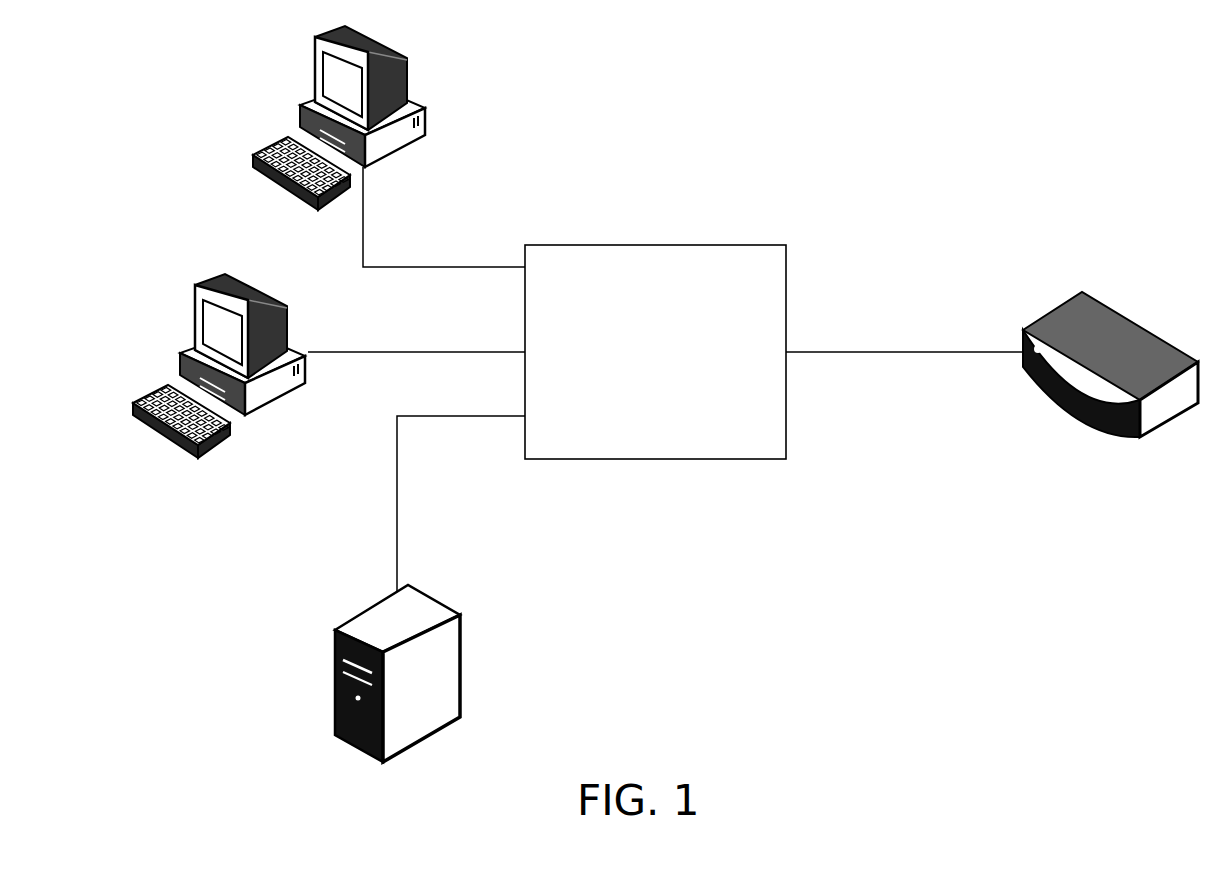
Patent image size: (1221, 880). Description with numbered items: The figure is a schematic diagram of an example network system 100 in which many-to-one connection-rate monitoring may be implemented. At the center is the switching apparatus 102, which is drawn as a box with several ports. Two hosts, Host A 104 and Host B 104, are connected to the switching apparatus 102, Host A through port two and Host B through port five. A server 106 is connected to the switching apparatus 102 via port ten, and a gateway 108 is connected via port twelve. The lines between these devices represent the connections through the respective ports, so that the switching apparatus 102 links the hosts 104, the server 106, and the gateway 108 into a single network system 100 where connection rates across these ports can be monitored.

The network system 100 is at (990, 811).
The switching apparatus 102 is at (656, 344).
The host 104 is at (247, 242).
The server 106 is at (350, 676).
The gateway 108 is at (1110, 412).